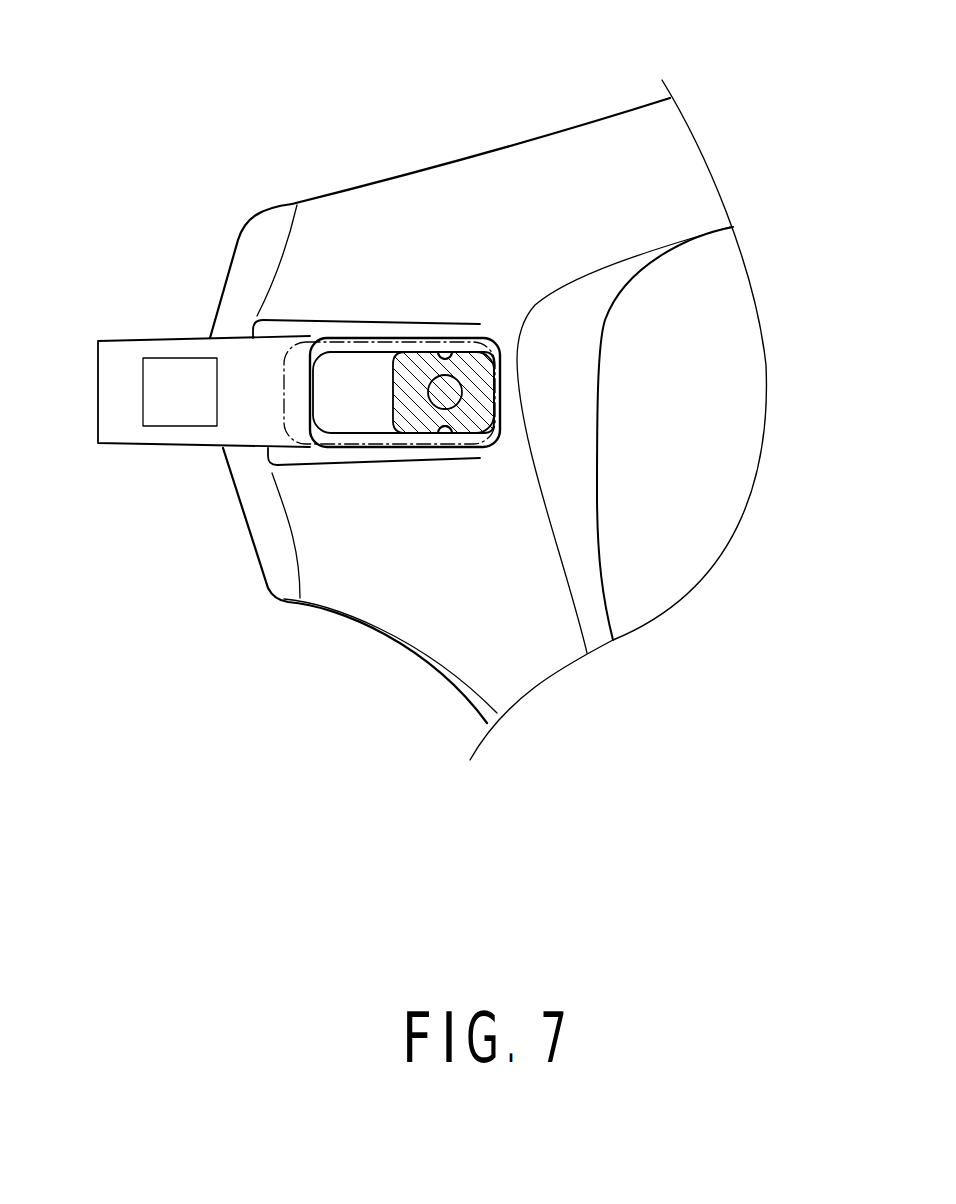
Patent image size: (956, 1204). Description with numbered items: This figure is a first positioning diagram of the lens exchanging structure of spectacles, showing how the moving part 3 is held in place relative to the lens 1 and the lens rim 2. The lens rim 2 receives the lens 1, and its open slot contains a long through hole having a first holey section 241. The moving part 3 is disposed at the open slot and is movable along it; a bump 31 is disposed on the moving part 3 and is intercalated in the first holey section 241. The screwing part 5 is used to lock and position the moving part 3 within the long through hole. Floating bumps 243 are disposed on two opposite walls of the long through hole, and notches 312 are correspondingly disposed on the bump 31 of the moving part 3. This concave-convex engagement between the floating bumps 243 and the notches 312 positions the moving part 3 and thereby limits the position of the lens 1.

The lens 1 is at (718, 377).
The lens rim 2 is at (632, 132).
The moving part 3 is at (123, 338).
The bump 31 is at (500, 373).
The notches 312 is at (398, 375).
The screwing part 5 is at (447, 385).
The first holey section 241 is at (353, 423).
The floating bumps 243 is at (445, 358).